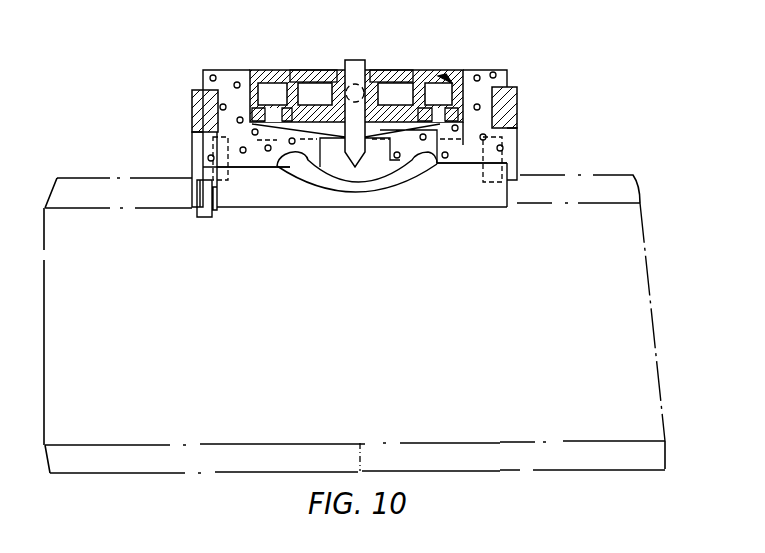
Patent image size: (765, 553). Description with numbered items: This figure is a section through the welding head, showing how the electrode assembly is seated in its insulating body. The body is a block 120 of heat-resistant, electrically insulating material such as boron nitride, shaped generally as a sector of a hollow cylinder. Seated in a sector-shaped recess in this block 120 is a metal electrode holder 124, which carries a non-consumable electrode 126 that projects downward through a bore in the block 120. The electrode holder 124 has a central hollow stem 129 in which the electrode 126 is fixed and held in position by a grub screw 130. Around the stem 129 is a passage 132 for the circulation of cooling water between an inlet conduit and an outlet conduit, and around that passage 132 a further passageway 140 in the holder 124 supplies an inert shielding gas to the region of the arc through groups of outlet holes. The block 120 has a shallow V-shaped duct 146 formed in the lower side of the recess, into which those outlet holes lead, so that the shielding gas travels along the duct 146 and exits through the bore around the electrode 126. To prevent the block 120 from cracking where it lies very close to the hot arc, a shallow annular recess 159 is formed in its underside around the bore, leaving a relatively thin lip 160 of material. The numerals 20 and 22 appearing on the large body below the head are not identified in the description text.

The roll 20 is at (112, 457).
The roll sleeve 22 is at (608, 457).
The block 120 is at (222, 69).
The electrode holder 124 is at (443, 100).
The non-consumable electrode 126 is at (413, 50).
The central hollow stem 129 is at (346, 80).
The grub screw 130 is at (400, 90).
The passage 132 is at (440, 76).
The passageway 140 is at (500, 88).
The V-shaped duct 146 is at (437, 165).
The annular recess 159 is at (385, 184).
The lip 160 is at (291, 164).